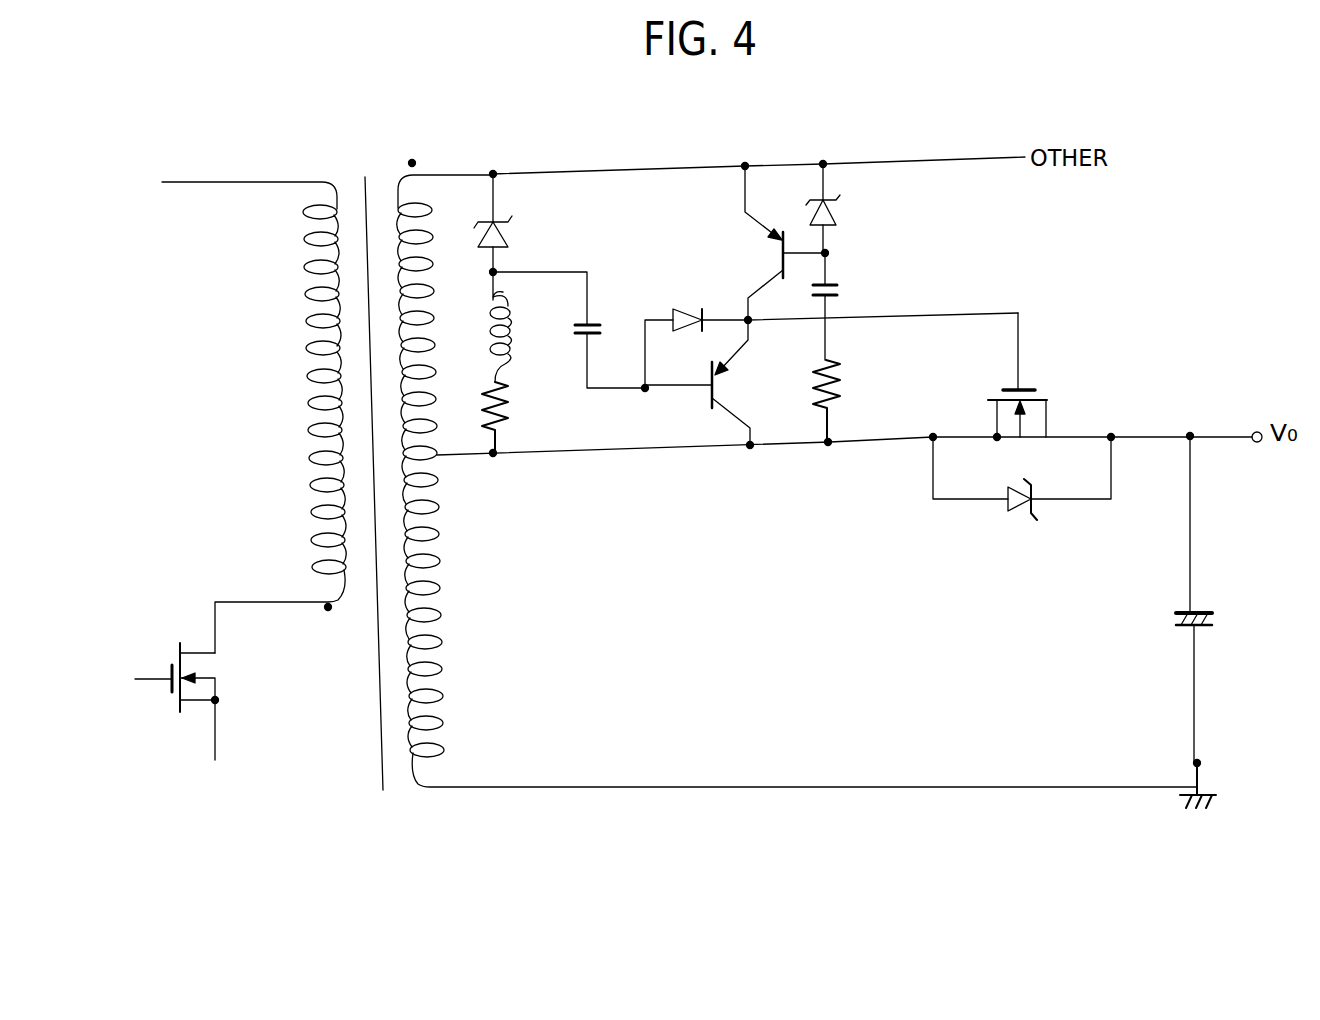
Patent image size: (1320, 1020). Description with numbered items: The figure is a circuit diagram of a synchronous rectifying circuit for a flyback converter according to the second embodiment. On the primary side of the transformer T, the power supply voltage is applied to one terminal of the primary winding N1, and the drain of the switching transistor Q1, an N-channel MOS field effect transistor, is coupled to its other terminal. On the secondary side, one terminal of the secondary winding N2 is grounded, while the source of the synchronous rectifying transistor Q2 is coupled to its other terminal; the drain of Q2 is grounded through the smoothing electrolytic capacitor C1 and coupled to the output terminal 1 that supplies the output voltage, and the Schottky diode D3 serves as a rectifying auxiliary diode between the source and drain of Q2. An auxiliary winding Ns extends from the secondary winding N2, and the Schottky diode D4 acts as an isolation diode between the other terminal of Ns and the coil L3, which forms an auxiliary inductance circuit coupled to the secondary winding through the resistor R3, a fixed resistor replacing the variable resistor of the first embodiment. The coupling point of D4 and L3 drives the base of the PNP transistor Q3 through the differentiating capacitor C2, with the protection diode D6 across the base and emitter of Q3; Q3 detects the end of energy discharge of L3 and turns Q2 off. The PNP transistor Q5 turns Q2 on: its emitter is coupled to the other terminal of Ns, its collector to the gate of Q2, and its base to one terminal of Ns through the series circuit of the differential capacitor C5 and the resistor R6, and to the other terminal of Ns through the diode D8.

The output terminal 1 is at (1254, 433).
The transformer T is at (369, 468).
The primary winding N1 is at (254, 417).
The auxiliary winding Ns is at (445, 310).
The secondary winding N2 is at (799, 621).
The switching transistor Q1 is at (191, 693).
The synchronous rectifying transistor Q2 is at (1024, 390).
The transistor Q3 is at (699, 384).
The transistor Q5 is at (782, 242).
The Schottky diode D3 is at (1022, 491).
The Schottky diode D4 is at (507, 223).
The protection diode D6 is at (698, 335).
The diode D8 is at (838, 207).
The smoothing electrolytic capacitor C1 is at (1201, 600).
The differentiating capacitor C2 is at (571, 332).
The differential capacitor C5 is at (843, 306).
The resistor R3 is at (512, 419).
The resistor R6 is at (844, 403).
The coil L3 is at (486, 327).